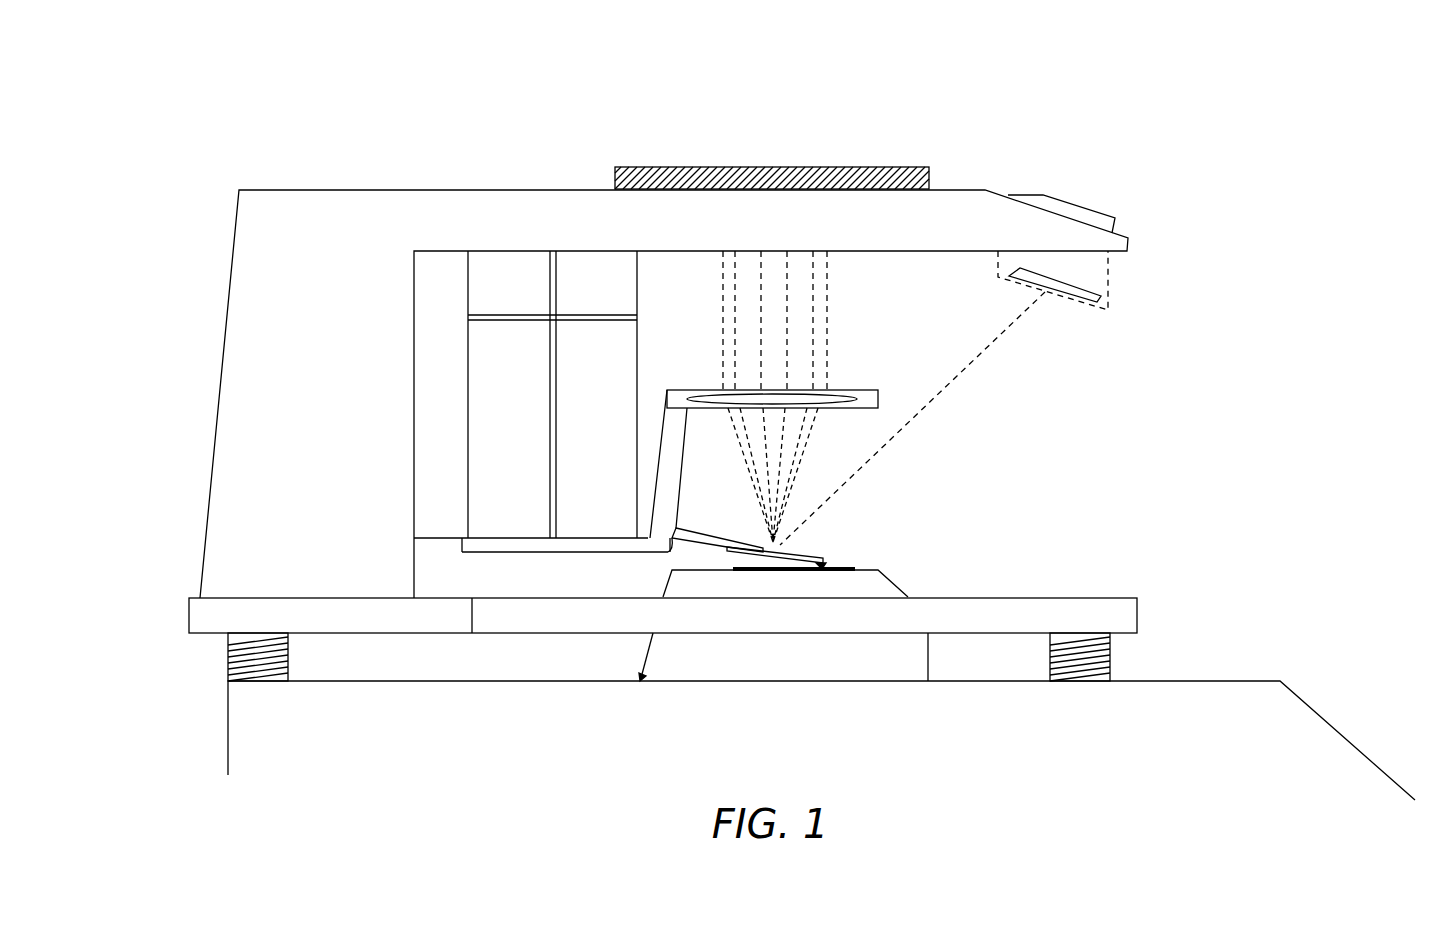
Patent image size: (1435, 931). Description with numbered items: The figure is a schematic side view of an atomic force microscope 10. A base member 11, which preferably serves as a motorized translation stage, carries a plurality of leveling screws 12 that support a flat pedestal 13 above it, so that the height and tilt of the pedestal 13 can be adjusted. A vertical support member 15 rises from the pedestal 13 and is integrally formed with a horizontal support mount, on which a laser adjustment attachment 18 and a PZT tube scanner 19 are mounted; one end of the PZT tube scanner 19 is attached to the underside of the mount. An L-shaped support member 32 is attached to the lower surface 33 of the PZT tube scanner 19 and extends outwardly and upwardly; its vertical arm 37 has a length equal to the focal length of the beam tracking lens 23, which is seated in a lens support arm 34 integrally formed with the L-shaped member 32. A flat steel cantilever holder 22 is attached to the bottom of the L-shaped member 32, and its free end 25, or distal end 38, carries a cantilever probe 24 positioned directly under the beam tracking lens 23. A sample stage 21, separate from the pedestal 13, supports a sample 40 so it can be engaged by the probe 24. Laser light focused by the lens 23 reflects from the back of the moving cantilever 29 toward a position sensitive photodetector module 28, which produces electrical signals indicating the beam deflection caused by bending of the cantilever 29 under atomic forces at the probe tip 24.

The atomic force microscope 10 is at (1120, 133).
The base member 11 is at (937, 748).
The leveling screws 12 is at (228, 673).
The pedestal 13 is at (1108, 597).
The vertical support member 15 is at (228, 425).
The laser adjustment attachment 18 is at (822, 167).
The PZT tube scanner 19 is at (640, 313).
The sample stage 21 is at (910, 597).
The cantilever holder 22 is at (705, 632).
The beam tracking lens 23 is at (837, 392).
The cantilever probe 24 is at (822, 566).
The free end 25 is at (772, 545).
The position sensitive photodetector module 28 is at (1070, 288).
The moving cantilever 29 is at (884, 500).
The L-shaped support member 32 is at (565, 645).
The lower surface 33 is at (460, 537).
The lens support arm 34 is at (880, 400).
The vertical arm 37 is at (656, 422).
The distal end 38 is at (611, 641).
The sample 40 is at (857, 568).